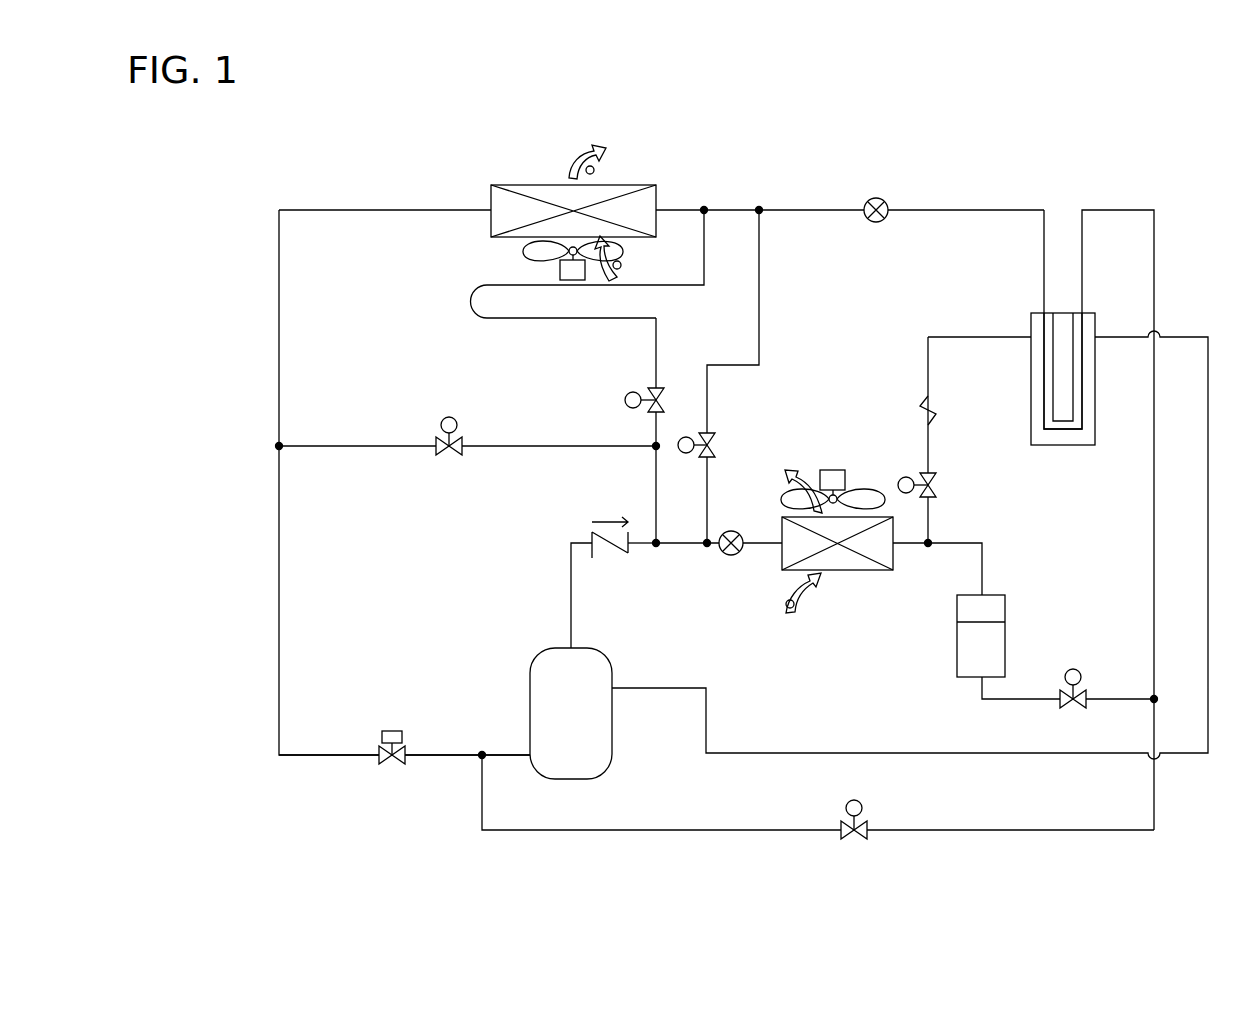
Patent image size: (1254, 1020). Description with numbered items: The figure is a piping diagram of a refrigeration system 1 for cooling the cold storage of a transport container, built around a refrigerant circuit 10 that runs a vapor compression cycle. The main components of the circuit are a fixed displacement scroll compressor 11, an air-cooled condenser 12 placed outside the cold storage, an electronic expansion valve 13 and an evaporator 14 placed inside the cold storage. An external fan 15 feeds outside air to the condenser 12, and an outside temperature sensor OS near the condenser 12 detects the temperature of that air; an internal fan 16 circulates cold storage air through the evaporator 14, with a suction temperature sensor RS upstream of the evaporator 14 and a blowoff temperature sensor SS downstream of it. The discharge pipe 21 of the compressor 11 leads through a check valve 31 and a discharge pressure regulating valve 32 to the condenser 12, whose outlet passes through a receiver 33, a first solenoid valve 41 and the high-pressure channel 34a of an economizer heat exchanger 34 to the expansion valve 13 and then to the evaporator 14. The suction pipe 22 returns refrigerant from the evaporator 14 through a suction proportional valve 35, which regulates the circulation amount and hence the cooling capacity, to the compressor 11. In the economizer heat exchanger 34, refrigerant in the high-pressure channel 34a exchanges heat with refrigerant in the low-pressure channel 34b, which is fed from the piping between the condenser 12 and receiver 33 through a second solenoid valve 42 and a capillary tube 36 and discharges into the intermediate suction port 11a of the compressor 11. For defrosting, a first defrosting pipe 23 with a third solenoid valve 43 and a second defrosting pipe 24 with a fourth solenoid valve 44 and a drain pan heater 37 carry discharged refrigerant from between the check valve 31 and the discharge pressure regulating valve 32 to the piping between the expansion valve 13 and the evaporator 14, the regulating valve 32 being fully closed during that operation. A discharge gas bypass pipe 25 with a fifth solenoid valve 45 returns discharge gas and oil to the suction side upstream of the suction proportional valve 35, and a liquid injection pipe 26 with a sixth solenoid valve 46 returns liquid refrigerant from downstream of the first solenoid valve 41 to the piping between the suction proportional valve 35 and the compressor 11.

The refrigeration system 1 is at (1180, 158).
The refrigerant circuit 10 is at (951, 190).
The compressor 11 is at (528, 694).
The intermediate suction port 11a is at (612, 692).
The condenser 12 is at (838, 572).
The expansion valve 13 is at (879, 198).
The evaporator 14 is at (490, 227).
The external fan 15 is at (853, 469).
The internal fan 16 is at (628, 253).
The discharge pipe 21 is at (571, 579).
The suction pipe 22 is at (438, 752).
The first defrosting pipe 23 is at (710, 385).
The second defrosting pipe 24 is at (656, 345).
The discharge gas bypass pipe 25 is at (505, 449).
The liquid injection pipe 26 is at (935, 833).
The check valve 31 is at (633, 552).
The discharge pressure regulating valve 32 is at (731, 556).
The receiver 33 is at (1005, 612).
The economizer heat exchanger 34 is at (1029, 300).
The high-pressure channel 34a is at (1082, 382).
The low-pressure channel 34b is at (1066, 436).
The suction proportional valve 35 is at (386, 735).
The capillary tube 36 is at (934, 408).
The drain pan heater 37 is at (469, 302).
The first solenoid valve 41 is at (1081, 673).
The second solenoid valve 42 is at (911, 476).
The third solenoid valve 43 is at (714, 450).
The fourth solenoid valve 44 is at (625, 402).
The fifth solenoid valve 45 is at (457, 420).
The sixth solenoid valve 46 is at (862, 808).
The blowoff temperature sensor SS is at (594, 170).
The suction temperature sensor RS is at (620, 268).
The outside temperature sensor OS is at (786, 608).